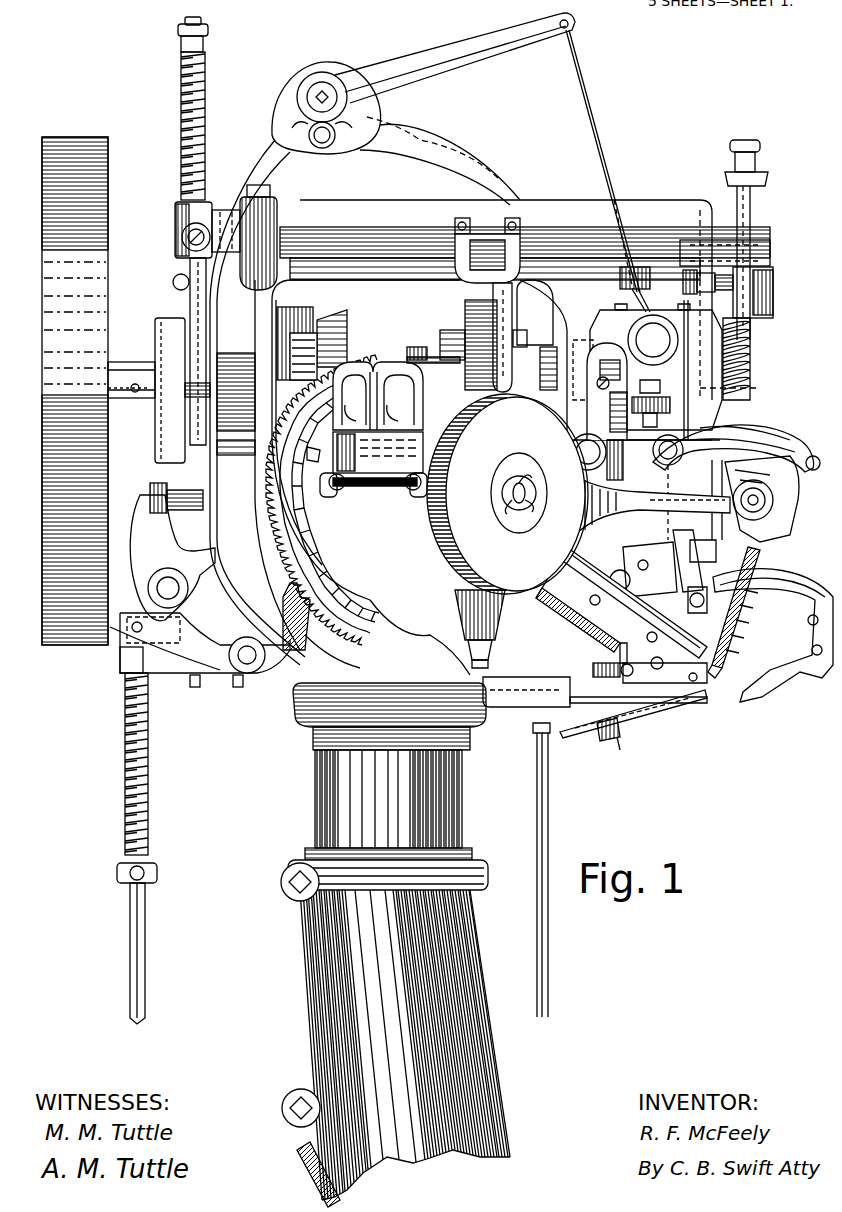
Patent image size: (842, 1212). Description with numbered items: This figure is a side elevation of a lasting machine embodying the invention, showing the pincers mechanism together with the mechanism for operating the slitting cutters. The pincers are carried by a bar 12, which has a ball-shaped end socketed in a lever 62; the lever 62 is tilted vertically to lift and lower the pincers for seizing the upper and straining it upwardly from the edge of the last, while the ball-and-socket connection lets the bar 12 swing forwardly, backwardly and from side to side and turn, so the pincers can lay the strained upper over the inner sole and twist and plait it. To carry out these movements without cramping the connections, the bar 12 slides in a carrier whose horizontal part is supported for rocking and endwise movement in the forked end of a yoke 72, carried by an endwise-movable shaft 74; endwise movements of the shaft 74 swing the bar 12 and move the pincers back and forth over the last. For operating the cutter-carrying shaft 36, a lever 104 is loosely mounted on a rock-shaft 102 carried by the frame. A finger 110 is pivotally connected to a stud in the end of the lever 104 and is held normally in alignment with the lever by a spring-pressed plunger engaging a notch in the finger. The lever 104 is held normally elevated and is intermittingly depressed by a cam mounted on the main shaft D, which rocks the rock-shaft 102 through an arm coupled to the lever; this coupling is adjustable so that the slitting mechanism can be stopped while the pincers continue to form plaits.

The bar 12 is at (750, 370).
The cutter-carrying shaft 36 is at (757, 565).
The lever 62 is at (773, 278).
The yoke 72 is at (653, 508).
The endwise-movable shaft 74 is at (180, 488).
The rock-shaft 102 is at (568, 448).
The lever 104 is at (603, 376).
The finger 110 is at (772, 533).
The main shaft D is at (737, 389).